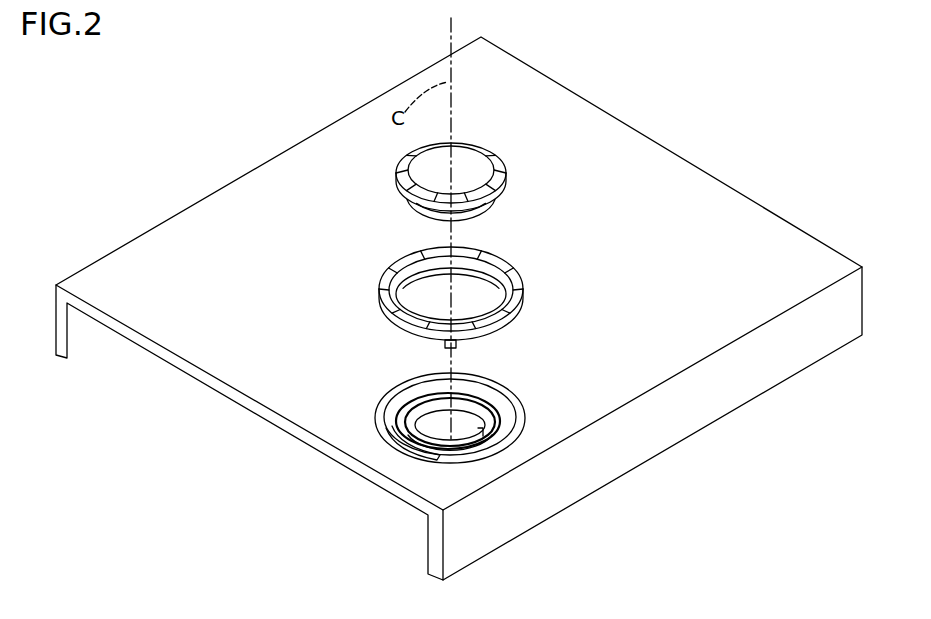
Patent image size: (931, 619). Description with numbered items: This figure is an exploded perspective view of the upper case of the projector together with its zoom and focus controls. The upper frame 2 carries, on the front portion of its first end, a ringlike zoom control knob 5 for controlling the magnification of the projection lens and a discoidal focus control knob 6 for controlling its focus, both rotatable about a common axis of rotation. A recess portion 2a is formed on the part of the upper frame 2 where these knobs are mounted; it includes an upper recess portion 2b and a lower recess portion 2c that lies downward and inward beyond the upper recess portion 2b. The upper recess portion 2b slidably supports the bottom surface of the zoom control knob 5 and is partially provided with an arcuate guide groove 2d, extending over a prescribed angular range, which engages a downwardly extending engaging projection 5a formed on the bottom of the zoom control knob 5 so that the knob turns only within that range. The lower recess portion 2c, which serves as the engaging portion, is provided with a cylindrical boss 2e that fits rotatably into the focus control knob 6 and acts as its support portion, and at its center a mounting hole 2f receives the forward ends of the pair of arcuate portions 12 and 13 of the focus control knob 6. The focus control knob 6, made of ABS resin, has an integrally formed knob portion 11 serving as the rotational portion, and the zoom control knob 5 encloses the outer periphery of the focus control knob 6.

The upper frame 2 is at (459, 308).
The recess portion 2a is at (450, 398).
The upper recess portion 2b is at (503, 404).
The lower recess portion 2c is at (399, 418).
The guide groove 2d is at (392, 429).
The boss 2e is at (411, 412).
The mounting hole 2f is at (483, 433).
The zoom control knob 5 is at (470, 300).
The engaging projection 5a is at (457, 347).
The focus control knob 6 is at (492, 157).
The knob portion 11 is at (498, 158).
The arcuate portion 12 is at (498, 213).
The arcuate portion 13 is at (484, 221).